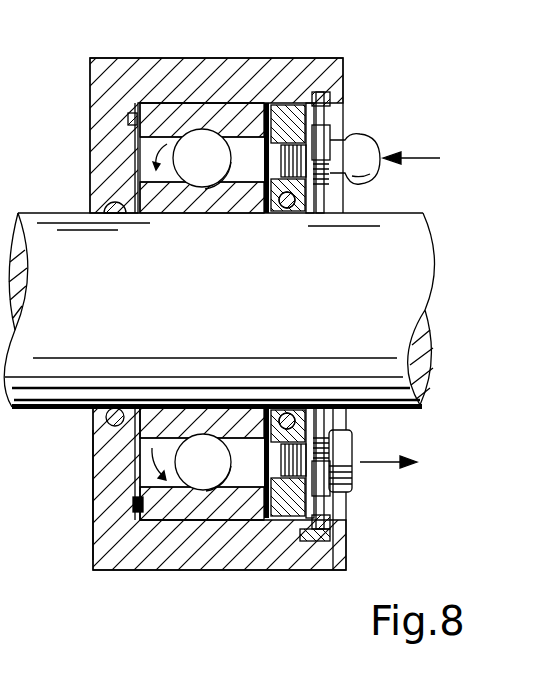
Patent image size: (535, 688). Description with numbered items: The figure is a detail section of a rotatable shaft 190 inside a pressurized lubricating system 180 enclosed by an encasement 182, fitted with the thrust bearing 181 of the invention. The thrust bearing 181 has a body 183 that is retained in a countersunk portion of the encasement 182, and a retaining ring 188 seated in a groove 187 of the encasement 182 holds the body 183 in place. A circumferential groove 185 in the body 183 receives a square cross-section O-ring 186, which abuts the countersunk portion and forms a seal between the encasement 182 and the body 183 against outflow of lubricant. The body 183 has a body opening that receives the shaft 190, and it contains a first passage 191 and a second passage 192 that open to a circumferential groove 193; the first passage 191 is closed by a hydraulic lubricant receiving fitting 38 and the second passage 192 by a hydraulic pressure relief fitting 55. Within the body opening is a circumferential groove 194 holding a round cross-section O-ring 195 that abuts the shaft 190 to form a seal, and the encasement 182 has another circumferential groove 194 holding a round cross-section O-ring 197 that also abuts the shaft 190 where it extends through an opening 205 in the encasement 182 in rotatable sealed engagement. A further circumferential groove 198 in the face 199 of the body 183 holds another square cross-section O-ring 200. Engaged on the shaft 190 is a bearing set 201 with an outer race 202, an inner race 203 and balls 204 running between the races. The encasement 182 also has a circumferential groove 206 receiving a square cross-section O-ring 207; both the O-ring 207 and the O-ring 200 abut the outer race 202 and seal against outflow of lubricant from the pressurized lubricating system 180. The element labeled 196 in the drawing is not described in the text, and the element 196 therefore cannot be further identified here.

The hydraulic lubricant receiving fitting 38 is at (371, 137).
The hydraulic pressure relief fitting 55 is at (347, 442).
The pressurized lubricating system 180 is at (343, 62).
The thrust bearing 181 is at (302, 103).
The encasement 182 is at (121, 572).
The body 183 is at (322, 575).
The circumferential groove 185 is at (310, 522).
The square cross-section O-ring 186 is at (300, 522).
The groove 187 is at (314, 92).
The retaining ring 188 is at (316, 104).
The shaft 190 is at (412, 275).
The first passage 191 is at (262, 143).
The second passage 192 is at (323, 402).
The circumferential groove 193 is at (252, 195).
The circumferential groove 194 is at (335, 196).
The round cross-section O-ring 195 is at (294, 412).
The sleeve 196 is at (104, 441).
The round cross-section O-ring 197 is at (108, 420).
The circumferential groove 198 is at (285, 566).
The face 199 is at (247, 107).
The square cross-section O-ring 200 is at (256, 535).
The bearing set 201 is at (137, 190).
The outer race 202 is at (206, 512).
The inner race 203 is at (167, 205).
The balls 204 is at (197, 142).
The opening 205 is at (88, 213).
The circumferential groove 206 is at (133, 505).
The square cross-section O-ring 207 is at (98, 543).